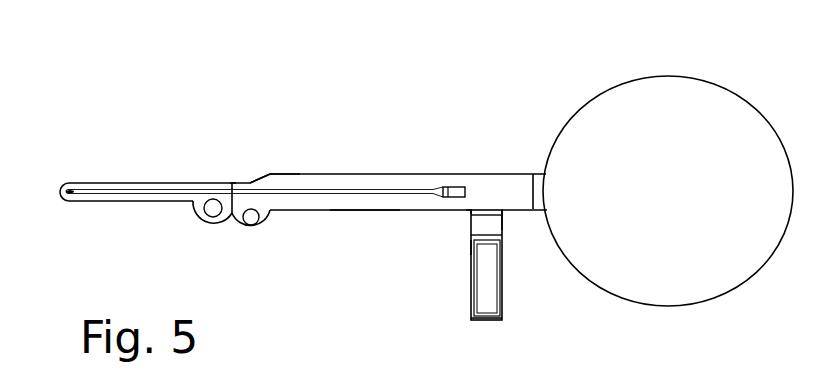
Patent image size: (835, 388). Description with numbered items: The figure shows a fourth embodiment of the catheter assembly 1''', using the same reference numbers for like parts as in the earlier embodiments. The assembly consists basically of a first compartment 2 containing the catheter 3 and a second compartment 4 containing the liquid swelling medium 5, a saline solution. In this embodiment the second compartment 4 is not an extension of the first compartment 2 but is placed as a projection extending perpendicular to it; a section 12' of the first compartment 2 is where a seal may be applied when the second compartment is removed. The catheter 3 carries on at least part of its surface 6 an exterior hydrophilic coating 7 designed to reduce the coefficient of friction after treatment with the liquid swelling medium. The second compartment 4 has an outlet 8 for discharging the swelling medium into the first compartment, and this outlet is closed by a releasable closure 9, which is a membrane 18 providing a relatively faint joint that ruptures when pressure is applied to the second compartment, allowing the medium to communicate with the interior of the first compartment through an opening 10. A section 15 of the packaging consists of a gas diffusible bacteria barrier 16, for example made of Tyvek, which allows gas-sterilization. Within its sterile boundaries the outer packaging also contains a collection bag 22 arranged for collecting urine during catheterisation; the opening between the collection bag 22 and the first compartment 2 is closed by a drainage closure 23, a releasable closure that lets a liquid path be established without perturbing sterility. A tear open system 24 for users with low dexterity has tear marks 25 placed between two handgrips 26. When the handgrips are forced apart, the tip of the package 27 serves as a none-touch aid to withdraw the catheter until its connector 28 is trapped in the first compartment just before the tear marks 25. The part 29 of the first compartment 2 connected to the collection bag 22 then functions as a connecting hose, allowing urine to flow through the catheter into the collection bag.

The catheter assembly 1''' is at (86, 58).
The first compartment 2 is at (389, 172).
The catheter 3 is at (313, 200).
The second compartment 4 is at (479, 294).
The liquid swelling medium 5 is at (488, 318).
The surface 6 is at (343, 189).
The hydrophilic coating 7 is at (366, 198).
The outlet 8 is at (472, 247).
The releasable closure 9 is at (478, 245).
The opening 10 is at (503, 215).
The section 12' is at (443, 224).
The section 15 is at (478, 225).
The gas diffusible bacteria barrier 16 is at (483, 236).
The membrane 18 is at (500, 240).
The collection bag 22 is at (682, 118).
The drainage closure 23 is at (533, 185).
The tear open system 24 is at (212, 170).
The tear marks 25 is at (232, 183).
The handgrips 26 is at (210, 212).
The tip of the package 27 is at (112, 183).
The connector 28 is at (453, 187).
The part of the first compartment 29 is at (280, 174).